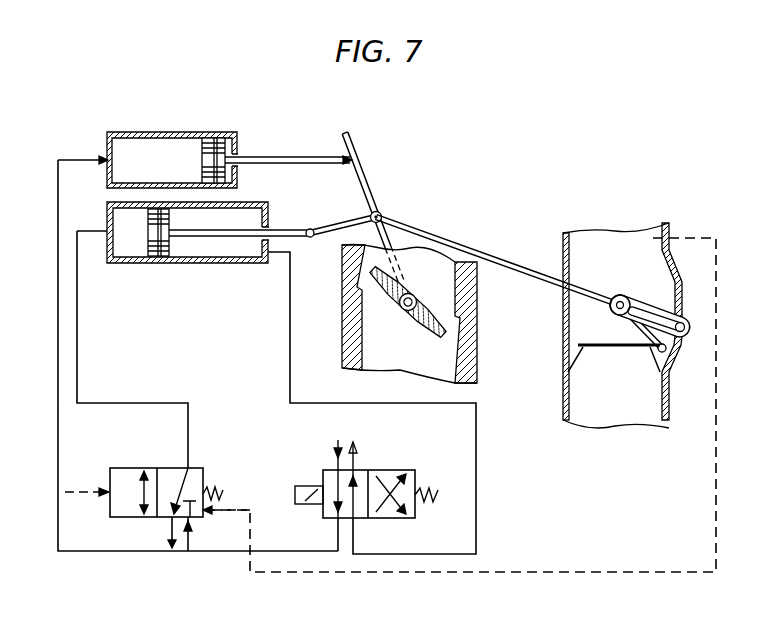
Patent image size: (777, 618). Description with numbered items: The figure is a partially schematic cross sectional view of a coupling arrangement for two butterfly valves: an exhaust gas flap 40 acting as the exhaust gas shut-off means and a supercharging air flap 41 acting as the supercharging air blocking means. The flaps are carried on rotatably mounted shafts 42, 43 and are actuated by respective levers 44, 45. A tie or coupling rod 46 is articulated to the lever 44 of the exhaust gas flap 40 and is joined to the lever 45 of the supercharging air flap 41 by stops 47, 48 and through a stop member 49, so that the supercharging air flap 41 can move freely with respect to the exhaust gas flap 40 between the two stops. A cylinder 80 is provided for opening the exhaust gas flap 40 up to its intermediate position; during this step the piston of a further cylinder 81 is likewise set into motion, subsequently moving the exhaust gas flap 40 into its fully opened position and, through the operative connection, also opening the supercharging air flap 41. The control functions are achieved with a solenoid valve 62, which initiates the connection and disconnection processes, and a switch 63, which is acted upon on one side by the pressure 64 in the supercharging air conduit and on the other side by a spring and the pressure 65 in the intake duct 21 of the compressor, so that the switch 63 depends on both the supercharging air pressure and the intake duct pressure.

The intake duct 21 is at (618, 252).
The exhaust gas flap 40 is at (421, 333).
The supercharging air flap 41 is at (600, 352).
The shaft 42 is at (411, 298).
The shaft 43 is at (656, 363).
The lever 44 is at (366, 194).
The lever 45 is at (645, 300).
The tie or coupling rod 46 is at (468, 248).
The stop 47 is at (612, 297).
The stop 48 is at (686, 318).
The stop member 49 is at (615, 319).
The solenoid valve 62 is at (396, 455).
The switch 63 is at (137, 449).
The pressure in the supercharging air conduit 64 is at (72, 494).
The pressure in the intake duct 65 is at (235, 513).
The cylinder 80 is at (172, 131).
The further cylinder 81 is at (193, 263).